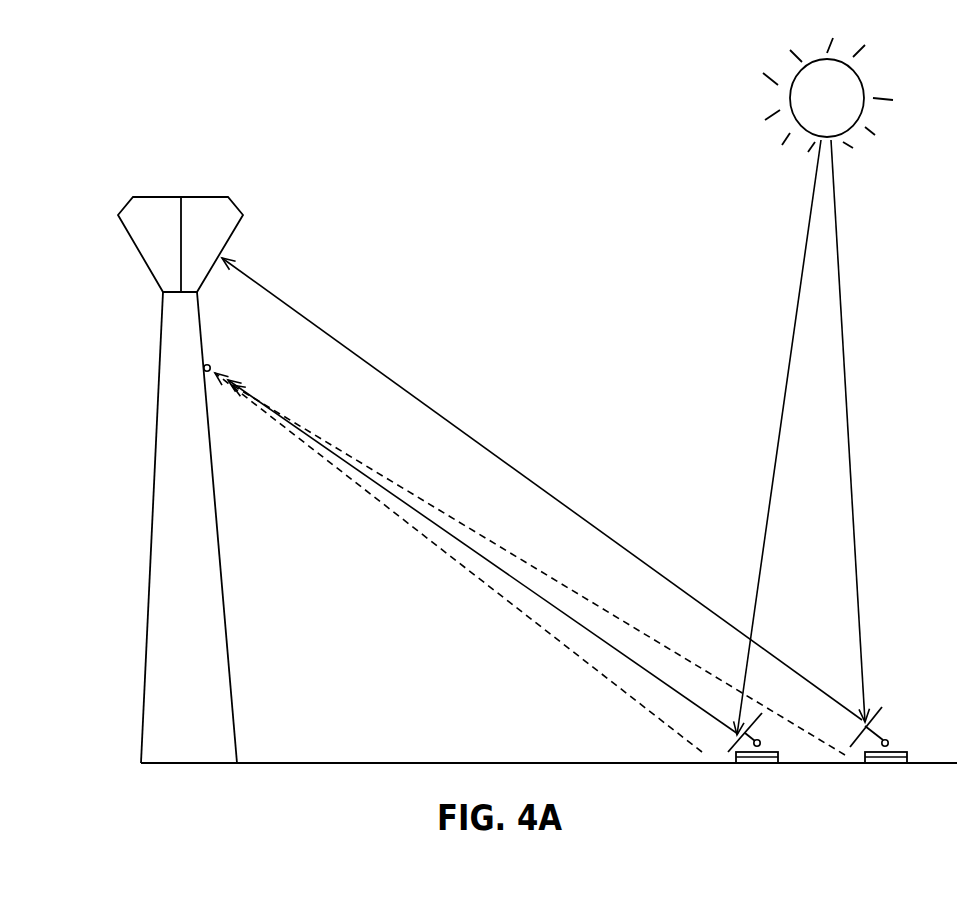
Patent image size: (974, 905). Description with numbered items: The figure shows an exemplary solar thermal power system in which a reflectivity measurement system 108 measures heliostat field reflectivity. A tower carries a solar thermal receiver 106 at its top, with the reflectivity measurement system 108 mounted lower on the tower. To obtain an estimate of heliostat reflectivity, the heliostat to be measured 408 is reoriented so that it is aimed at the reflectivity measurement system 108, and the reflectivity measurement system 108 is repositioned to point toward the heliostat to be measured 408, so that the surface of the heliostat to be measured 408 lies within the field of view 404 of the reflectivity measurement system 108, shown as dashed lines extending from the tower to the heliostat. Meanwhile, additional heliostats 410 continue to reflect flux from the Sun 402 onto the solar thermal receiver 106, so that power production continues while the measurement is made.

The solar thermal receiver 106 is at (215, 220).
The reflectivity measurement system 108 is at (207, 372).
The Sun 402 is at (847, 90).
The field of view 404 is at (412, 527).
The heliostat to be measured 408 is at (750, 765).
The additional heliostats 410 is at (880, 765).